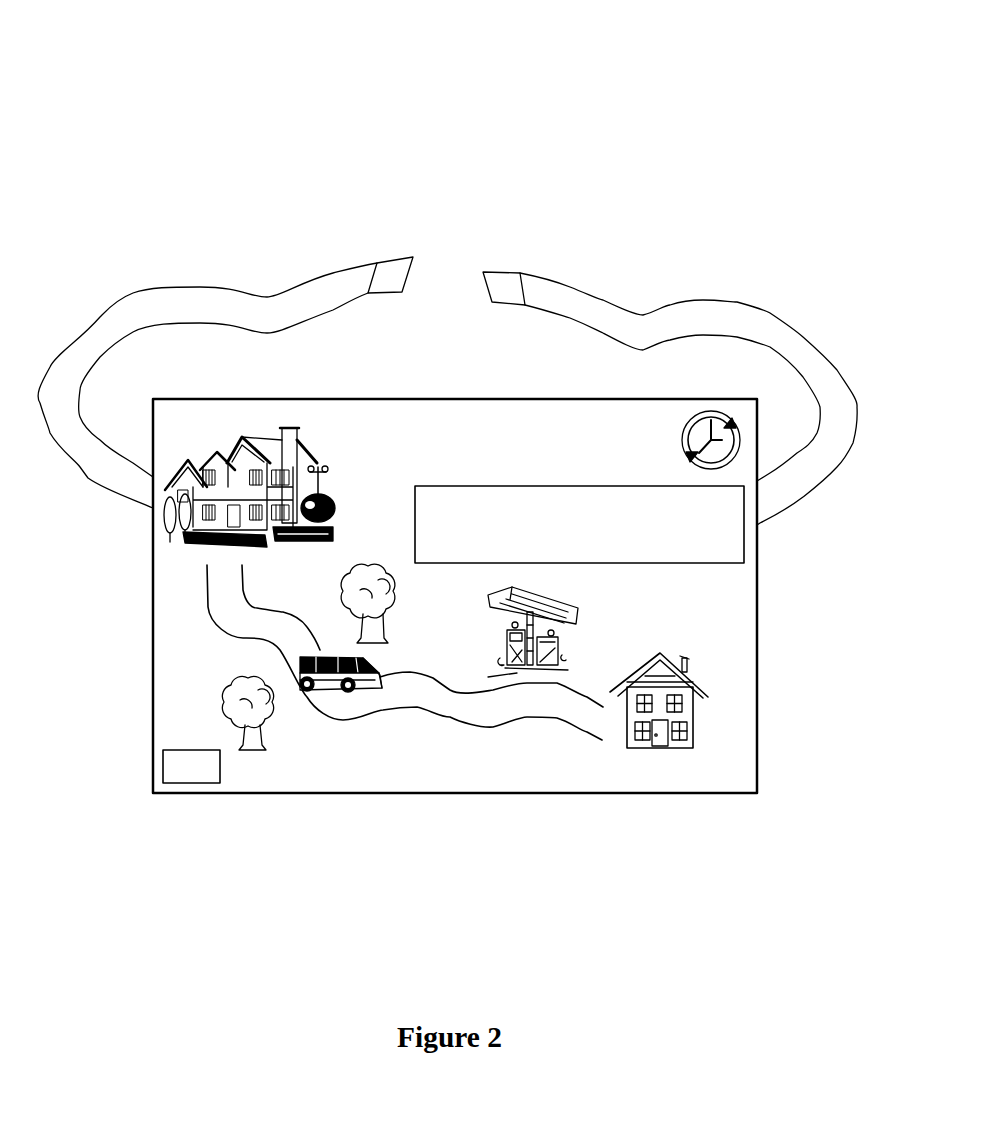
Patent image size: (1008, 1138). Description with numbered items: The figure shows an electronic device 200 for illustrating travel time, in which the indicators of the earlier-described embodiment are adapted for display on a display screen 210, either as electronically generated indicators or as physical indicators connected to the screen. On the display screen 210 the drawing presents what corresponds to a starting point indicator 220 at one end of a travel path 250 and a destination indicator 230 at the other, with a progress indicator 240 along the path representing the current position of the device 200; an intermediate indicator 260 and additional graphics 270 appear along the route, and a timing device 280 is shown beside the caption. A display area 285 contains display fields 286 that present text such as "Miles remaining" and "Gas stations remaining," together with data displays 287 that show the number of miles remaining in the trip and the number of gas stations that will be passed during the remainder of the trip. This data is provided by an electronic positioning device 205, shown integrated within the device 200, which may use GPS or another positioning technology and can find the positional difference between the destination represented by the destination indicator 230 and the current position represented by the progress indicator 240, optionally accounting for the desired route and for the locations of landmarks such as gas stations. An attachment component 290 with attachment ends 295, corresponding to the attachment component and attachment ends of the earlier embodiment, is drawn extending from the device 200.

The electronic device 200 is at (180, 57).
The electronic positioning device 205 is at (163, 780).
The display screen 210 is at (757, 752).
The destination town icon 220 is at (193, 538).
The destination indicator 230 is at (652, 745).
The progress indicator 240 is at (345, 690).
The route road 250 is at (480, 727).
The gas station icon 260 is at (563, 625).
The tree landmark icon 270 is at (223, 707).
The clock icon 280 is at (682, 437).
The display area 285 is at (744, 532).
The display fields 286 is at (638, 555).
The data displays 287 is at (737, 550).
The strap 290 is at (97, 320).
The strap end 295 is at (405, 257).